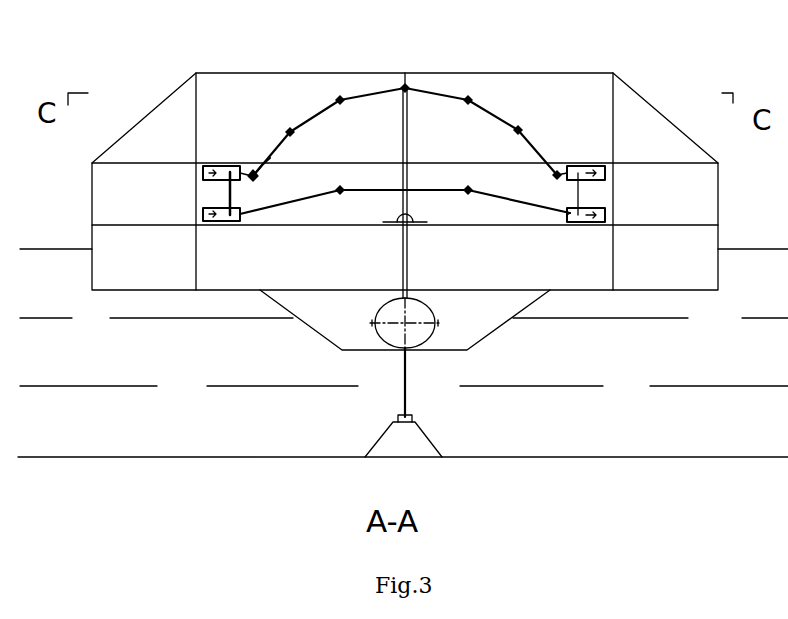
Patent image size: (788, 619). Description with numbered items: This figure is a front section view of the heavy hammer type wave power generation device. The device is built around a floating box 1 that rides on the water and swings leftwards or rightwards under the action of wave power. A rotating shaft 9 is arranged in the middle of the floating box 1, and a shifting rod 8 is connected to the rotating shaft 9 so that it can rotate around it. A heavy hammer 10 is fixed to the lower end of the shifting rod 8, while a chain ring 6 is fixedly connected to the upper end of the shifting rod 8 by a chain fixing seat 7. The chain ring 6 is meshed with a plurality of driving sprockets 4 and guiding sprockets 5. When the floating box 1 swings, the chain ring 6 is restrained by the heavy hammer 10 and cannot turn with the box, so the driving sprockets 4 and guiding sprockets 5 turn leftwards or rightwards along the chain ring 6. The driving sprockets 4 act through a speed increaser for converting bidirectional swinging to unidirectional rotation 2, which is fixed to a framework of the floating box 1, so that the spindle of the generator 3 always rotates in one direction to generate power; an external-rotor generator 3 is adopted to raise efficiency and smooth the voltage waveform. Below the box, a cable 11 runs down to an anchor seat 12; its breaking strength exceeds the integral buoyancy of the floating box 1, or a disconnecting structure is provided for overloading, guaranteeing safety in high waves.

The floating box 1 is at (145, 150).
The speed increaser for converting bidirectional swinging to unidirectional rotation 2 is at (212, 164).
The generator 3 is at (216, 167).
The driving sprockets 4 is at (229, 177).
The guiding sprockets 5 is at (254, 175).
The chain ring 6 is at (381, 91).
The chain fixing seat 7 is at (407, 135).
The shifting rod 8 is at (408, 212).
The rotating shaft 9 is at (470, 188).
The heavy hammer 10 is at (415, 315).
The cable 11 is at (405, 380).
The anchor seat 12 is at (408, 437).